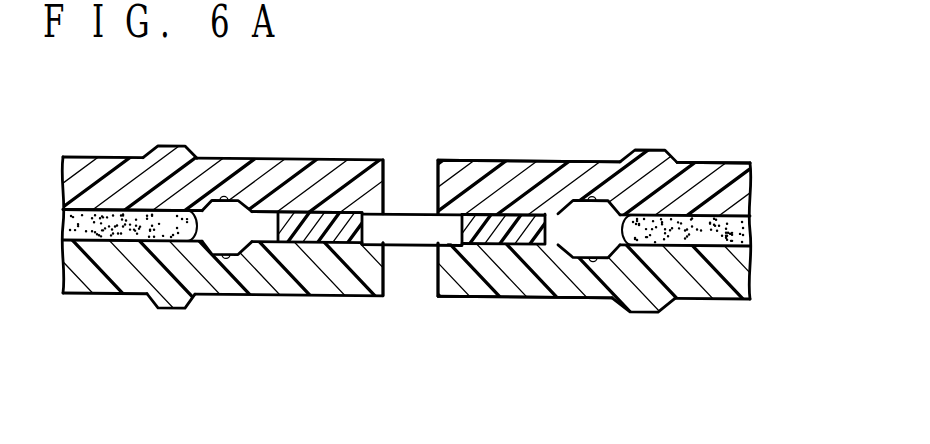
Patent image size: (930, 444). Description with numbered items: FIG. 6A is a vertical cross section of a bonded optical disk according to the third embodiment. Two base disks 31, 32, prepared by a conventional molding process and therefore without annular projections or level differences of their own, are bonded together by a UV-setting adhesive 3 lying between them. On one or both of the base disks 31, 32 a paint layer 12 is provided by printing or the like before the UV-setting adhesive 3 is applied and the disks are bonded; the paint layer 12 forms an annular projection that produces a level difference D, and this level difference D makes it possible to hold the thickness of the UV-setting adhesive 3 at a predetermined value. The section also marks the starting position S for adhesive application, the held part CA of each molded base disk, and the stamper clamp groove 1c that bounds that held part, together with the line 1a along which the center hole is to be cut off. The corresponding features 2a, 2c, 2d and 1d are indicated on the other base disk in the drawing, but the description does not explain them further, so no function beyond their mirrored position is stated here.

The line for center hole cut-off 1a is at (437, 178).
The stamper clamp groove 1c is at (228, 197).
The projection of upper base plate 1d is at (170, 146).
The through hole wall of lower base plate 2a is at (436, 279).
The recess of lower base plate 2c is at (227, 257).
The projection of lower base plate 2d is at (168, 309).
The UV-setting adhesive 3 is at (712, 227).
The paint layer 12 is at (350, 218).
The base disk 31 is at (578, 152).
The base disk 32 is at (513, 306).
The starting position for adhesive application S is at (168, 231).
The held part CA is at (358, 150).
The level difference D is at (402, 268).